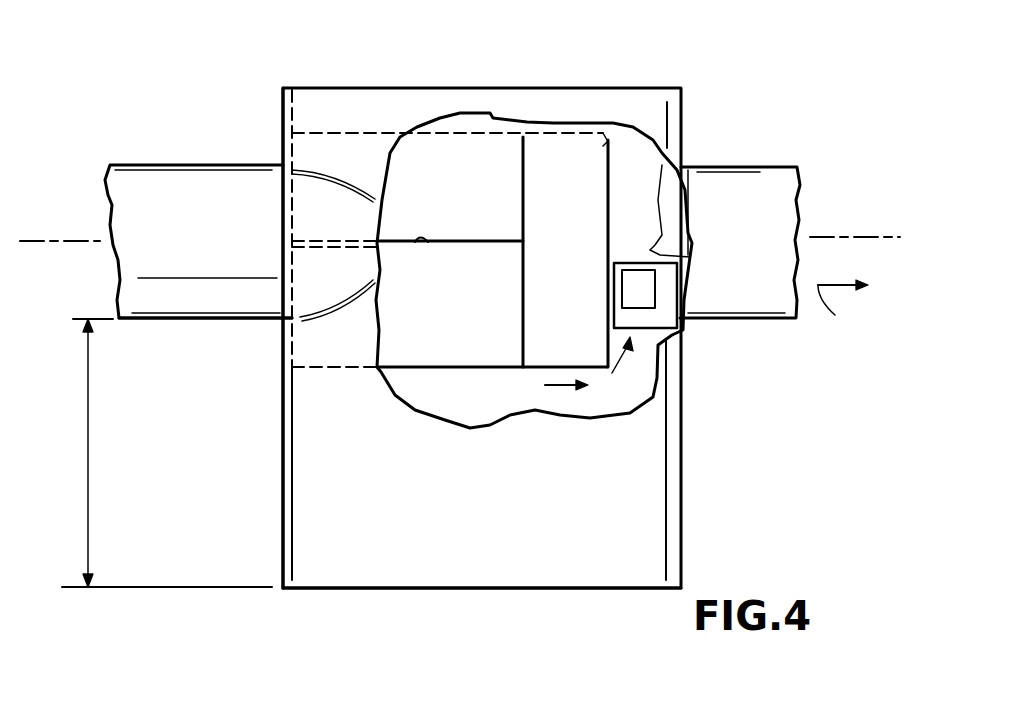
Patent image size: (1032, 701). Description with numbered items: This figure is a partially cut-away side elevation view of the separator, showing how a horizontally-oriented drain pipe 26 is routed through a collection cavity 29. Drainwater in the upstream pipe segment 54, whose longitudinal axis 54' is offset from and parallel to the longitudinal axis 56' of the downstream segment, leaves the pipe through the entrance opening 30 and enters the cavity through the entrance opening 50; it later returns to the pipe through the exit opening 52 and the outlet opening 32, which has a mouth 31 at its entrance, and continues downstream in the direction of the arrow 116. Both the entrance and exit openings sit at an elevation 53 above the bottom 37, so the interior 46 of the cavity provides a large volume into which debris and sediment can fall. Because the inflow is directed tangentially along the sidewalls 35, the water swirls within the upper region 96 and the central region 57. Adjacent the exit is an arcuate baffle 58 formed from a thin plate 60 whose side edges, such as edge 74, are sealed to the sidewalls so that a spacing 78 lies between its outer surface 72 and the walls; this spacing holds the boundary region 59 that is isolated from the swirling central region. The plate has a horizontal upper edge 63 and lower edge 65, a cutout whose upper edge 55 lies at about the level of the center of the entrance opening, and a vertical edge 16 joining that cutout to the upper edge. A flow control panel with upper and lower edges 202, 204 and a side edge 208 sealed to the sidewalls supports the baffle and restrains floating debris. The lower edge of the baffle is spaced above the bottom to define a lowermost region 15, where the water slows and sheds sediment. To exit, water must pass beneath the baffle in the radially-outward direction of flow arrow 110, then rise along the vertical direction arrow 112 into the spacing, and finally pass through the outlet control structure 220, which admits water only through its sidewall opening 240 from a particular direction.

The lowermost region 15 is at (495, 414).
The vertically-disposed edge 16 is at (525, 170).
The drain pipe 26 is at (180, 163).
The collection cavity 29 is at (283, 518).
The entrance opening 30 is at (285, 313).
The mouth 31 is at (690, 252).
The outlet opening 32 is at (667, 152).
The sidewalls 35 is at (690, 218).
The bottom 37 is at (527, 590).
The interior 46 is at (439, 402).
The entrance opening 50 is at (303, 170).
The exit opening 52 is at (667, 213).
The elevation 53 is at (88, 478).
The upstream pipe segment 54 is at (205, 346).
The longitudinal axis 54' is at (60, 213).
The upper edge 55 is at (430, 244).
The longitudinal axis 56' is at (855, 189).
The central region 57 is at (431, 214).
The baffle 58 is at (683, 390).
The boundary region 59 is at (646, 399).
The plate 60 is at (557, 133).
The upper edge 63 is at (584, 133).
The lower edge 65 is at (540, 373).
The outer surface 72 is at (628, 122).
The side edge 74 is at (523, 187).
The spacing 78 is at (651, 196).
The upper region 96 is at (458, 347).
The flow arrow 110 is at (570, 390).
The direction arrow 112 is at (640, 357).
The outlet flow direction 116 is at (848, 305).
The upper edge 202 is at (333, 131).
The lower edge 204 is at (523, 250).
The side edge 208 is at (283, 200).
The outlet control structure 220 is at (672, 328).
The sidewall opening 240 is at (637, 305).